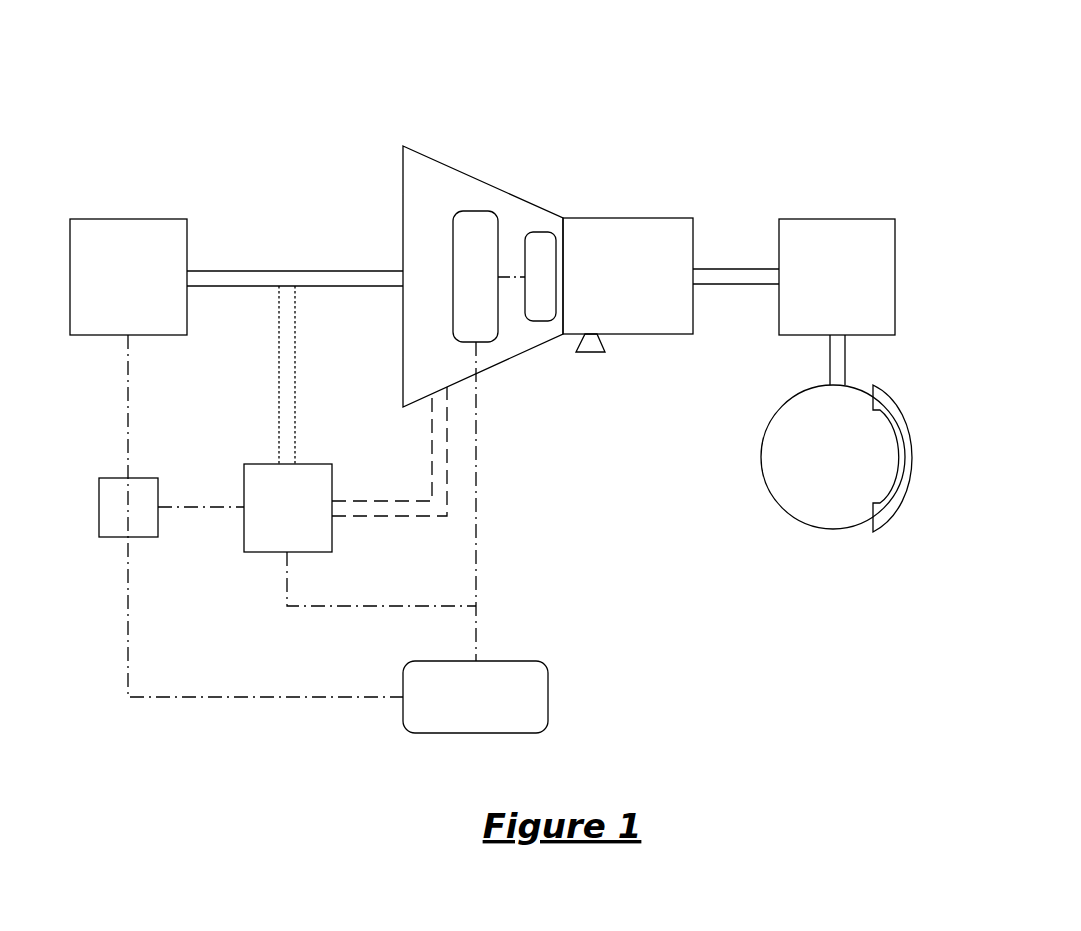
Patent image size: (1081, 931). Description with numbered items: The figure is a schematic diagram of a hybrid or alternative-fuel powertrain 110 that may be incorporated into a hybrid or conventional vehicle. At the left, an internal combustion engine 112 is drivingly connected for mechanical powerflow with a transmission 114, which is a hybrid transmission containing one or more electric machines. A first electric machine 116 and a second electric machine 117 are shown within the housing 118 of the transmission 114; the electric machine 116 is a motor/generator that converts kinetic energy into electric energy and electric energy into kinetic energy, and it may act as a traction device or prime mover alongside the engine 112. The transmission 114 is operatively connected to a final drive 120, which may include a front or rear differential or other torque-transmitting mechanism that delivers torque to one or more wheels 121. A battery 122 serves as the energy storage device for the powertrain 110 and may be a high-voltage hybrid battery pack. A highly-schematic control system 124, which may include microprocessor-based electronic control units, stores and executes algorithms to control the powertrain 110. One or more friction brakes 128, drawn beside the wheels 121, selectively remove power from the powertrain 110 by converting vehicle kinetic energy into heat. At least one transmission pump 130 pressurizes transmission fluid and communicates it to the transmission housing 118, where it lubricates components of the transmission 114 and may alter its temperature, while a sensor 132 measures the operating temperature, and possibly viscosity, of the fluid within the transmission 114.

The powertrain 110 is at (773, 108).
The internal combustion engine 112 is at (128, 277).
The transmission 114 is at (388, 165).
The electric machine 116 is at (472, 211).
The second electric machine 117 is at (540, 232).
The transmission housing 118 is at (662, 334).
The final drive 120 is at (837, 277).
The wheels 121 is at (833, 457).
The battery 122 is at (475, 697).
The control system 124 is at (128, 507).
The friction brakes 128 is at (902, 493).
The transmission pump 130 is at (244, 528).
The sensor 132 is at (590, 353).